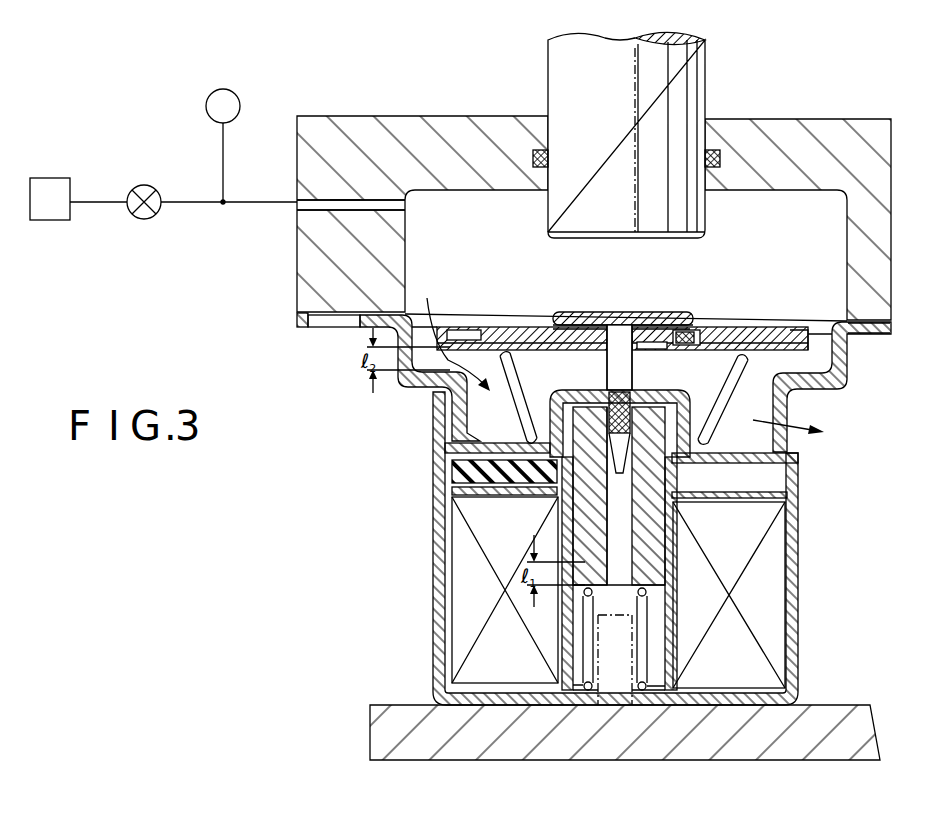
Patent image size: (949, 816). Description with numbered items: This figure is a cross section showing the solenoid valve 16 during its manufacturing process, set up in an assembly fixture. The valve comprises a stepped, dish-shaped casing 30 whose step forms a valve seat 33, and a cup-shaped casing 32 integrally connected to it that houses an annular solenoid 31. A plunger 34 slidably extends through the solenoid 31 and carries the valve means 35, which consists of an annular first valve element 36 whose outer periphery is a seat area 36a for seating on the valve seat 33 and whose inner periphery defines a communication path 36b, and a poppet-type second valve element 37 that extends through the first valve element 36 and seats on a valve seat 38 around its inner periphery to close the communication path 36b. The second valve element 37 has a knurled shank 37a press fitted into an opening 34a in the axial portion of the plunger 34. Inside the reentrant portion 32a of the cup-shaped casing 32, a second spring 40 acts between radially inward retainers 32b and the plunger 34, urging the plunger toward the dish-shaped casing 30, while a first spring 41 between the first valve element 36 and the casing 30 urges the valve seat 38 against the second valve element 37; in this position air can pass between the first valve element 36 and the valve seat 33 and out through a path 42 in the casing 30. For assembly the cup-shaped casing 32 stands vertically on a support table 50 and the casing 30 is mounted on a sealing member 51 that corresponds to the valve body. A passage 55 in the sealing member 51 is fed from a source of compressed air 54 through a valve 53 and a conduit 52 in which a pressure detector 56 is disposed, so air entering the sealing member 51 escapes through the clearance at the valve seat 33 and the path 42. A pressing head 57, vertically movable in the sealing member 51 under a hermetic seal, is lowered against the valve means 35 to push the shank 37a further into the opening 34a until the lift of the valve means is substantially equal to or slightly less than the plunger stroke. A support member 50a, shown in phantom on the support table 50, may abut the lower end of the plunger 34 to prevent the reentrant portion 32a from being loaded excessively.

The solenoid valve 16 is at (611, 528).
The dish-shaped casing 30 is at (847, 387).
The solenoid 31 is at (765, 606).
The cup-shaped casing 32 is at (797, 555).
The reentrant portion 32a is at (652, 637).
The retainers 32b is at (585, 706).
The valve seat 33 is at (835, 374).
The plunger 34 is at (653, 537).
The opening 34a is at (648, 512).
The valve means 35 is at (686, 300).
The first valve element 36 is at (752, 318).
The seat area 36a is at (825, 337).
The communication path 36b is at (655, 327).
The second valve element 37 is at (598, 300).
The shank 37a is at (625, 375).
The valve seat 38 is at (702, 330).
The second spring 40 is at (636, 706).
The first spring 41 is at (712, 427).
The path 42 is at (783, 410).
The support table 50 is at (833, 706).
The support member 50a is at (655, 625).
The sealing member 51 is at (893, 228).
The conduit 52 is at (256, 203).
The valve 53 is at (143, 219).
The source of compressed air 54 is at (52, 220).
The passage 55 is at (358, 200).
The pressure detector 56 is at (238, 97).
The pressing head 57 is at (686, 100).